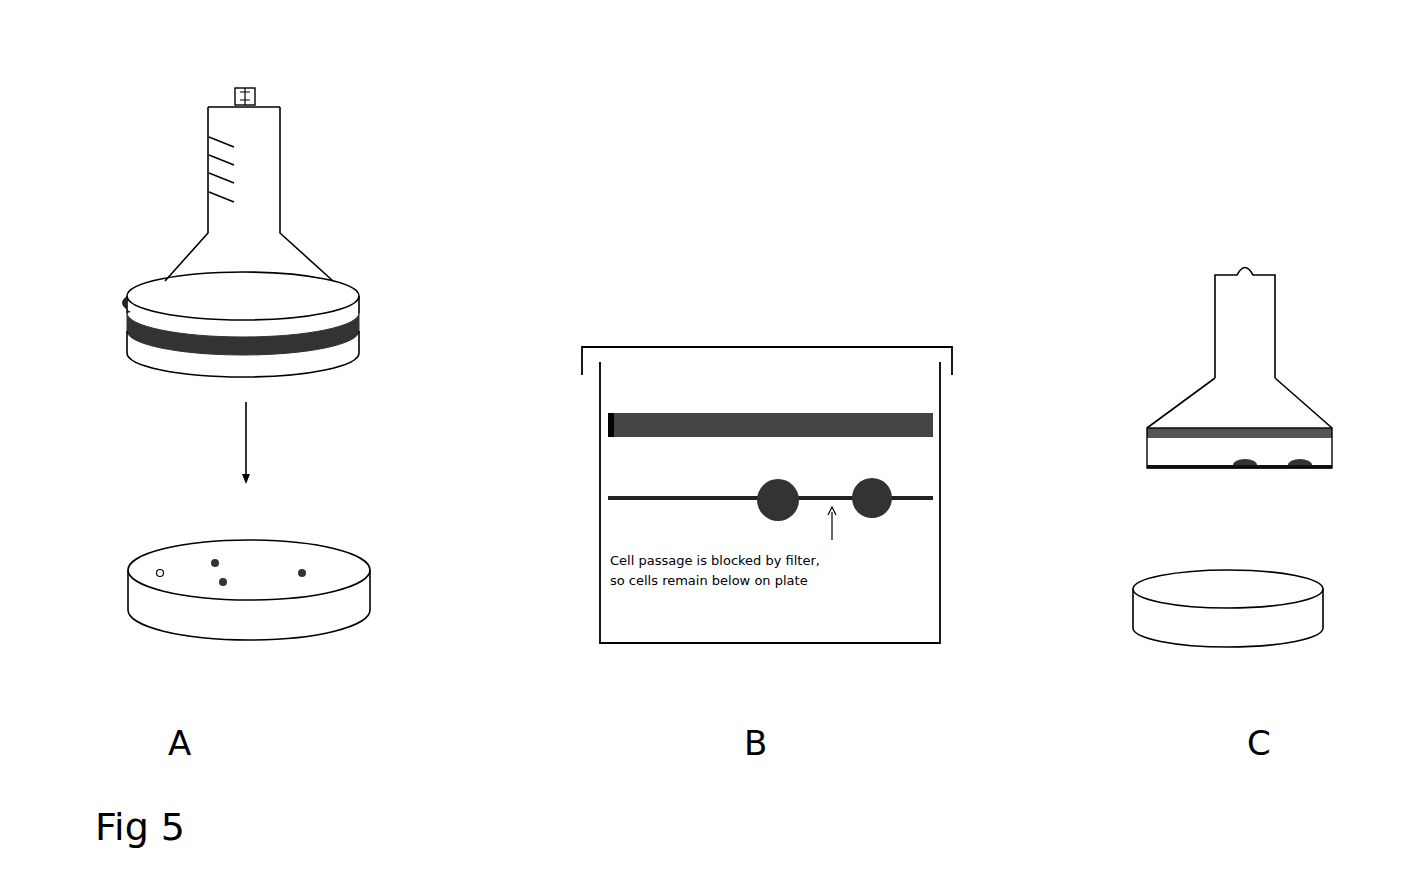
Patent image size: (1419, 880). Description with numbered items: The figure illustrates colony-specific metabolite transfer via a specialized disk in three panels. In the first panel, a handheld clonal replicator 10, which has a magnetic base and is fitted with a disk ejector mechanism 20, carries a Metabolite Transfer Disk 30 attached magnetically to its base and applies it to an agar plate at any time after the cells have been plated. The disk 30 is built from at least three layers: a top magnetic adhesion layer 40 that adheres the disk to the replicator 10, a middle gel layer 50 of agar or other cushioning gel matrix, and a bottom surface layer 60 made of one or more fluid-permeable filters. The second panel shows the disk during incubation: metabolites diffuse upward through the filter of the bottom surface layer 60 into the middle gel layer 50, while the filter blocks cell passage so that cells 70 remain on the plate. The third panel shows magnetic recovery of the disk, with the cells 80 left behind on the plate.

The clonal replicator 10 is at (255, 158).
The disk ejector mechanism 20 is at (255, 93).
The Metabolite Transfer Disk 30 is at (288, 320).
The top magnetic adhesion layer 40 is at (358, 320).
The middle gel layer 50 is at (690, 473).
The bottom surface layer 60 is at (330, 360).
The cells 70 is at (780, 480).
The cells on plate 80 is at (305, 571).